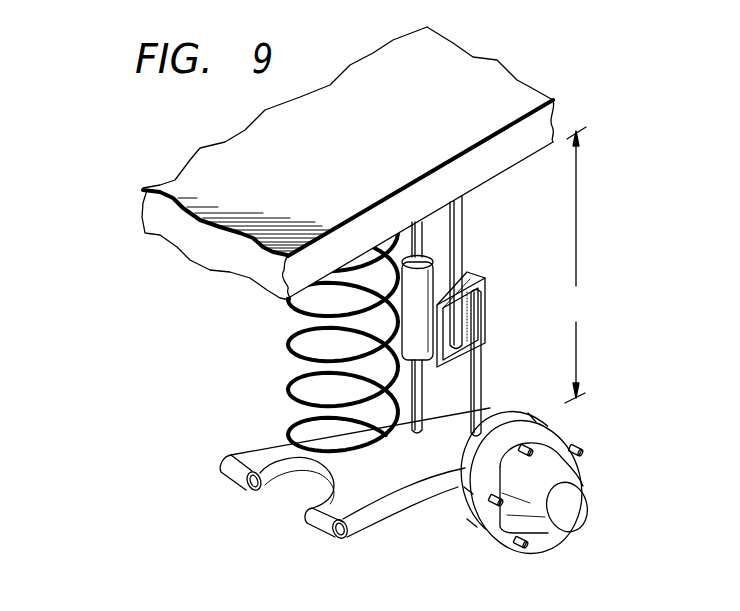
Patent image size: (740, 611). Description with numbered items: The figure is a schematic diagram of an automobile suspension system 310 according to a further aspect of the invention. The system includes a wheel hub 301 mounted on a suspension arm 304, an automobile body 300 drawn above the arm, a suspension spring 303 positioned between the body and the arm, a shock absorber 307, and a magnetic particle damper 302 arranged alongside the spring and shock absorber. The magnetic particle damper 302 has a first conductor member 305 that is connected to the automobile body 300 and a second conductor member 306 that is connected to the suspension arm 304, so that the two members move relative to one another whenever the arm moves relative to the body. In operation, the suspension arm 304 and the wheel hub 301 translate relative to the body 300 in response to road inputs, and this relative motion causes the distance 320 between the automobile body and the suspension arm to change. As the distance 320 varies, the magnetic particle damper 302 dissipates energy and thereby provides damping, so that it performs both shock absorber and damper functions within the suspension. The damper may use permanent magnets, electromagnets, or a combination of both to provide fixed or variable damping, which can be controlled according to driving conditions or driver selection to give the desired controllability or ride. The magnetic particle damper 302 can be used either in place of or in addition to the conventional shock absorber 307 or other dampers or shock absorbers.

The automobile body 300 is at (215, 160).
The wheel hub 301 is at (594, 473).
The magnetic particle damper 302 is at (476, 278).
The suspension spring 303 is at (288, 343).
The suspension arm 304 is at (398, 473).
The first conductor member 305 is at (463, 214).
The second conductor member 306 is at (483, 367).
The shock absorber 307 is at (434, 269).
The automobile suspension system 310 is at (119, 371).
The distance 320 is at (576, 265).